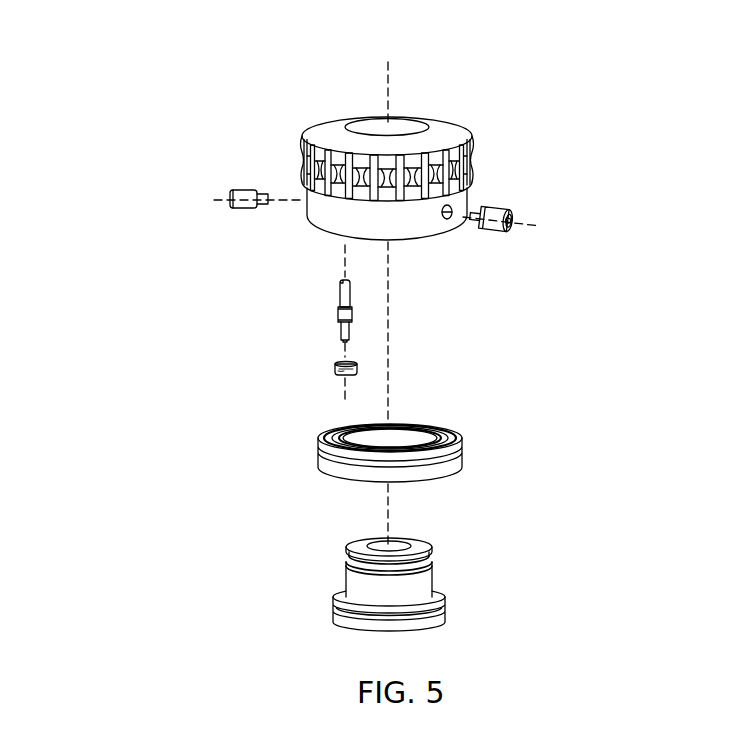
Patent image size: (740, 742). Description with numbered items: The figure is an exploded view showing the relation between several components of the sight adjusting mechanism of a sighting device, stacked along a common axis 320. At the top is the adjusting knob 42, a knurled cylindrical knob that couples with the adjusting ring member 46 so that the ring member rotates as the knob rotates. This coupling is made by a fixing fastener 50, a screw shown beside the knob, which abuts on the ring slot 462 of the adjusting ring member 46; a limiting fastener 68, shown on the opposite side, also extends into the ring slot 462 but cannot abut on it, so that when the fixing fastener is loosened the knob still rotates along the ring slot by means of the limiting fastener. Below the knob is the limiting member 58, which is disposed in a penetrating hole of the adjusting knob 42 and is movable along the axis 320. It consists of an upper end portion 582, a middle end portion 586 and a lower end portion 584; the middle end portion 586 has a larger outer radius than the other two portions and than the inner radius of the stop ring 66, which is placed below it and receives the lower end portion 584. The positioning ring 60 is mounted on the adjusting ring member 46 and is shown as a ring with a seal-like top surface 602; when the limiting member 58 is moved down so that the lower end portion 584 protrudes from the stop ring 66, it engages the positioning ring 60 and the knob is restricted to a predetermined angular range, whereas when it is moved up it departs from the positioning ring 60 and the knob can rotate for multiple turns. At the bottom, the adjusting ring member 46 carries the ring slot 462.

The axis 320 is at (388, 80).
The adjusting knob 42 is at (312, 135).
The limiting fastener 68 is at (232, 192).
The fixing fastener 50 is at (497, 208).
The limiting member 58 is at (202, 300).
The upper end portion 582 is at (340, 285).
The middle end portion 586 is at (338, 313).
The lower end portion 584 is at (340, 337).
The stop ring 66 is at (335, 363).
The positioning ring 60 is at (341, 425).
The seal ring 602 is at (455, 428).
The adjusting ring member 46 is at (341, 572).
The ring slot 462 is at (430, 568).